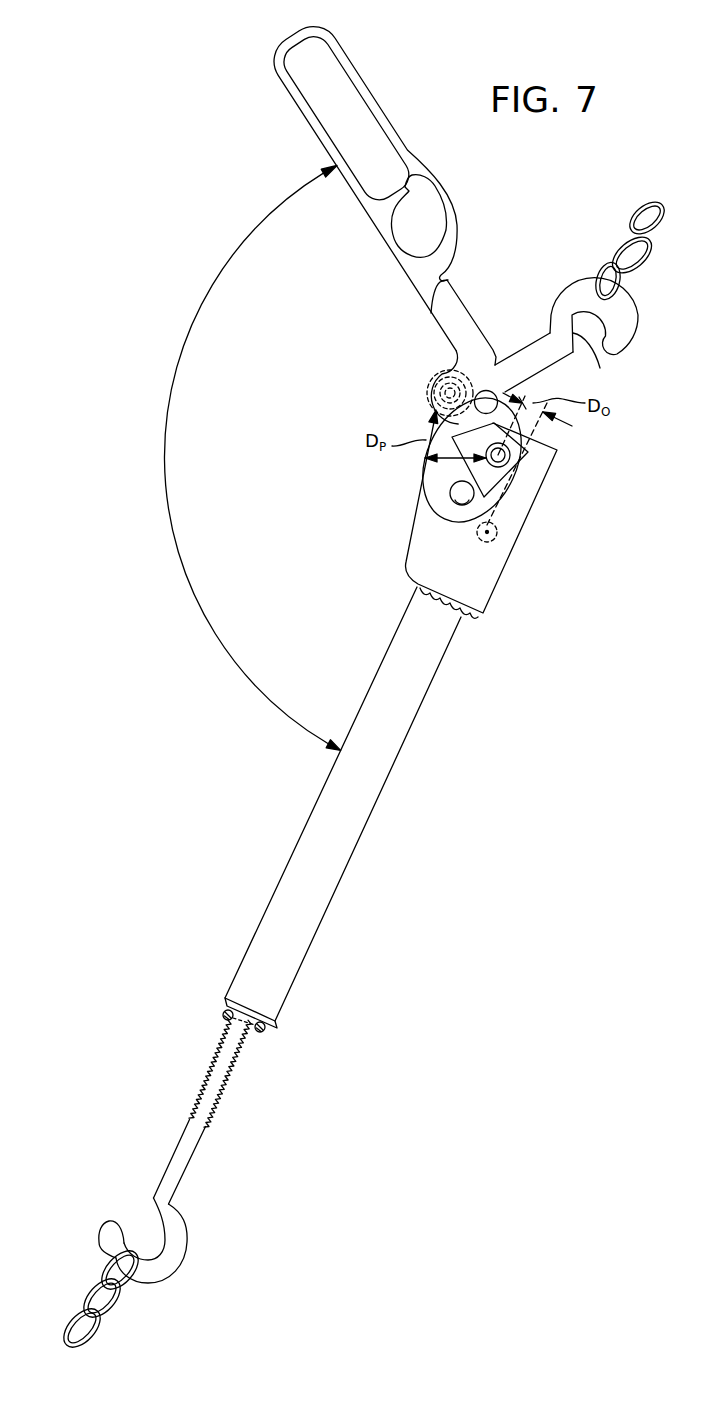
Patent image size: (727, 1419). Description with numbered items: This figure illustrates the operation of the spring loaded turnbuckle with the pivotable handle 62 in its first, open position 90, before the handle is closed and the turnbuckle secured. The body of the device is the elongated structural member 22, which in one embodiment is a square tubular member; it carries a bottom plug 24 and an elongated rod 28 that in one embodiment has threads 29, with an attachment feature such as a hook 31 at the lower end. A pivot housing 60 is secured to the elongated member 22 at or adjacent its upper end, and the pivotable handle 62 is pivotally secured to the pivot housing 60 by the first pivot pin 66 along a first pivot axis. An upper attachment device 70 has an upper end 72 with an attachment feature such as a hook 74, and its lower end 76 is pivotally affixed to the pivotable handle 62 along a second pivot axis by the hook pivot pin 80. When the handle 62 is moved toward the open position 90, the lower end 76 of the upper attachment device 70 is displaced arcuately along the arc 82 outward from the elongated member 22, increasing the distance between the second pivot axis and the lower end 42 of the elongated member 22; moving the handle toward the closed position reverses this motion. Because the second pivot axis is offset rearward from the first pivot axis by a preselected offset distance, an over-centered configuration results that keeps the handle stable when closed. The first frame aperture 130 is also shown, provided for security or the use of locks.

The first, open position 90 is at (288, 90).
The pivotable handle 62 is at (443, 312).
The lower end of the upper attachment device 76 is at (427, 392).
The hook pivot pin 80 is at (468, 385).
The upper attachment device 70 is at (573, 333).
The hook 74 is at (612, 315).
The upper end 72 is at (638, 300).
The pivot housing 60 is at (500, 578).
The arc 82 is at (423, 480).
The first pivot pin 66 is at (510, 460).
The first frame aperture 130 is at (478, 525).
The elongated structural member 22 is at (323, 933).
The lower end of the elongated member 42 is at (278, 1022).
The bottom plug 24 is at (272, 1028).
The threads 29 is at (229, 1081).
The elongated rod 28 is at (172, 1172).
The hook 31 is at (140, 1237).